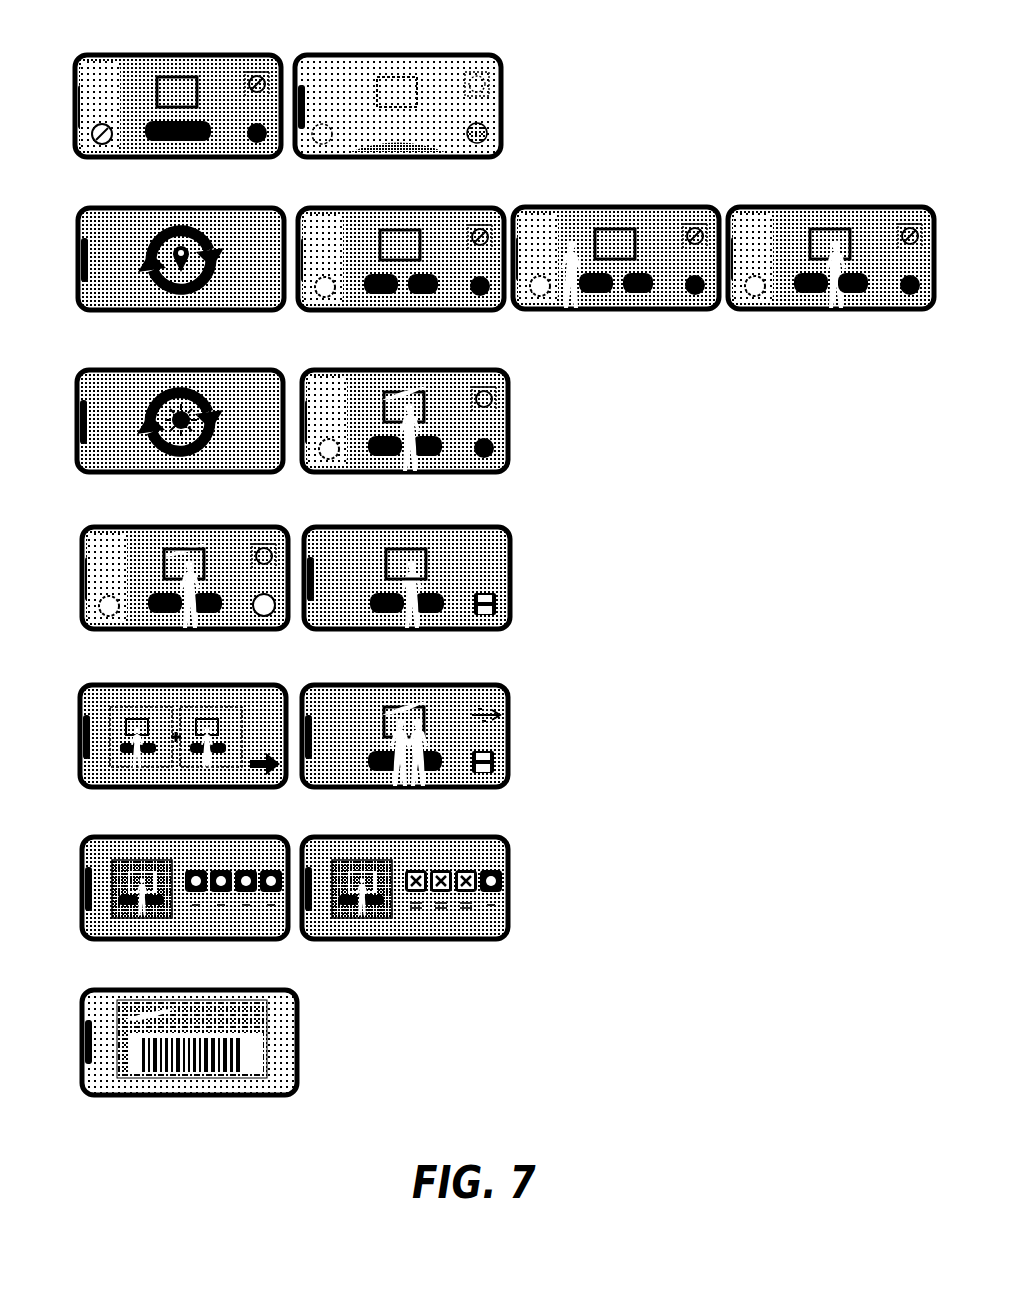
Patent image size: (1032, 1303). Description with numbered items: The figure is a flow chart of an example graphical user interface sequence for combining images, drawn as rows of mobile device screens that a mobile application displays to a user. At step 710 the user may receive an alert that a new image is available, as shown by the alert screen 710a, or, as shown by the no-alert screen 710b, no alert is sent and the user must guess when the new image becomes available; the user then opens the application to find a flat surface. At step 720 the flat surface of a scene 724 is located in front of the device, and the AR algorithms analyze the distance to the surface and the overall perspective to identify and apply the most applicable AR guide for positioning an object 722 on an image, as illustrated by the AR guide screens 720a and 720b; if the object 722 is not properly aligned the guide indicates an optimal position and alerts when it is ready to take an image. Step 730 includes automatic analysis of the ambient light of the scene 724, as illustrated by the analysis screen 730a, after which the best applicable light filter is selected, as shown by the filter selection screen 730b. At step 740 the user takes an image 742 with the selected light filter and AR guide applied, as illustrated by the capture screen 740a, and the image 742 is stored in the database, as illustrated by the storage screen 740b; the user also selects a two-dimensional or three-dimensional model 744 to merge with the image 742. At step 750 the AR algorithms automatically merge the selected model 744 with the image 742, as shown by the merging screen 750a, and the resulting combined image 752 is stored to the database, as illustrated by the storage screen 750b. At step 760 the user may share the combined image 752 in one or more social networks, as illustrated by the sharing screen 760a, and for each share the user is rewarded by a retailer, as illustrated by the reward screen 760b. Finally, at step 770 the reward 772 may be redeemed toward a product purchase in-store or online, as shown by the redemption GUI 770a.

The alert receiving step 710 is at (62, 106).
The alert screen 710a is at (178, 52).
The no-alert screen 710b is at (430, 51).
The AR guide positioning step 720 is at (62, 284).
The AR guide screen 720a is at (195, 204).
The AR guide screen 720b is at (403, 204).
The object 722 is at (410, 273).
The scene 724 is at (365, 250).
The ambient light analysis step 730 is at (62, 446).
The ambient light analysis screen 730a is at (185, 366).
The light filter selection screen 730b is at (438, 366).
The image capture step 740 is at (62, 582).
The image capture screen 740a is at (206, 523).
The image storage screen 740b is at (460, 523).
The image 742 is at (217, 570).
The 2D/3D model 744 is at (400, 427).
The merging step 750 is at (62, 754).
The merging screen 750a is at (218, 681).
The combined image storage screen 750b is at (470, 681).
The combined image 752 is at (460, 735).
The sharing step 760 is at (62, 934).
The social sharing screen 760a is at (216, 833).
The reward screen 760b is at (468, 833).
The reward redemption step 770 is at (62, 1062).
The redemption GUI 770a is at (226, 986).
The reward 772 is at (247, 1060).